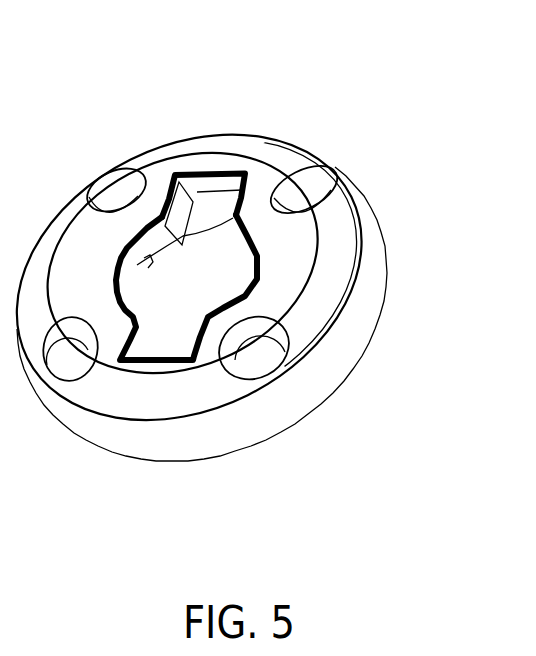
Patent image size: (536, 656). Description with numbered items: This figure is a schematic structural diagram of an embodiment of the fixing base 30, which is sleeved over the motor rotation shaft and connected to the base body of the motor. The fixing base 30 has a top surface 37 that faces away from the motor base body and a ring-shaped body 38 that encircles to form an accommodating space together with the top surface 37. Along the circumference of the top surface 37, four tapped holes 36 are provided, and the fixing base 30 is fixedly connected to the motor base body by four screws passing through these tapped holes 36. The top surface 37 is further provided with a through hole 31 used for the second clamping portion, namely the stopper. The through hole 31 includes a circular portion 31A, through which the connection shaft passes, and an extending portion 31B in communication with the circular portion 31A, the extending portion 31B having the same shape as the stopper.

The fixing base 30 is at (248, 291).
The through hole 31 is at (299, 187).
The circular portion 31A is at (210, 253).
The extending portion 31B is at (208, 186).
The tapped holes 36 is at (70, 352).
The top surface 37 is at (285, 263).
The ring-shaped body 38 is at (346, 332).